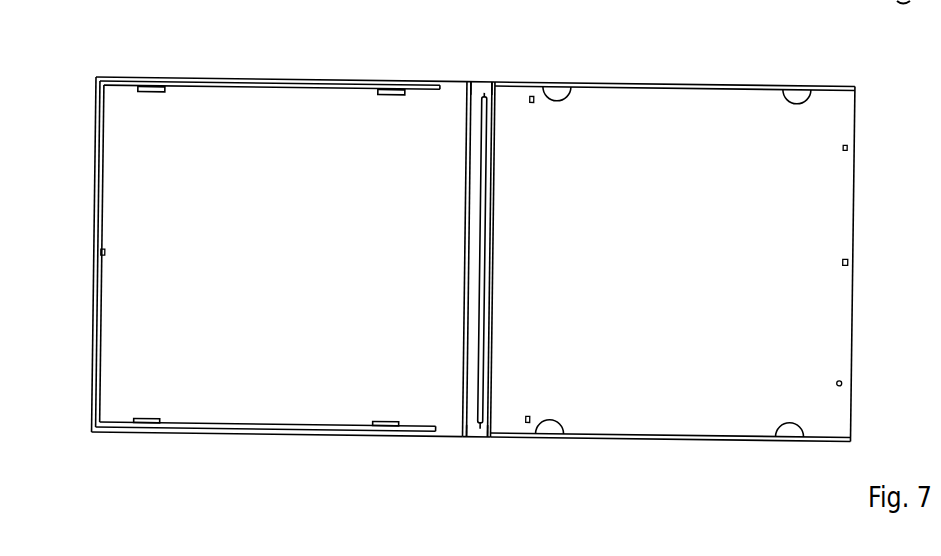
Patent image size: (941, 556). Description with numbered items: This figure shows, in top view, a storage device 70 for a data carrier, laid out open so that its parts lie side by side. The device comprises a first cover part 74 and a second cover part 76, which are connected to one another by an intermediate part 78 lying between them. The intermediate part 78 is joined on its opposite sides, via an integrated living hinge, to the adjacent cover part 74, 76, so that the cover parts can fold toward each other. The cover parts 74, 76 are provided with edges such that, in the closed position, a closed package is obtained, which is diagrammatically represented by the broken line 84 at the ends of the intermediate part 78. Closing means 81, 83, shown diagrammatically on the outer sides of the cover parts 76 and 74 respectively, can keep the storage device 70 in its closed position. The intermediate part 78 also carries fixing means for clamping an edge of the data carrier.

The storage device 70 is at (88, 94).
The first cover part 74 is at (282, 268).
The second cover part 76 is at (680, 274).
The intermediate part 78 is at (482, 88).
The closing means 81 is at (855, 254).
The closing means 83 is at (103, 252).
The broken line 84 is at (468, 78).